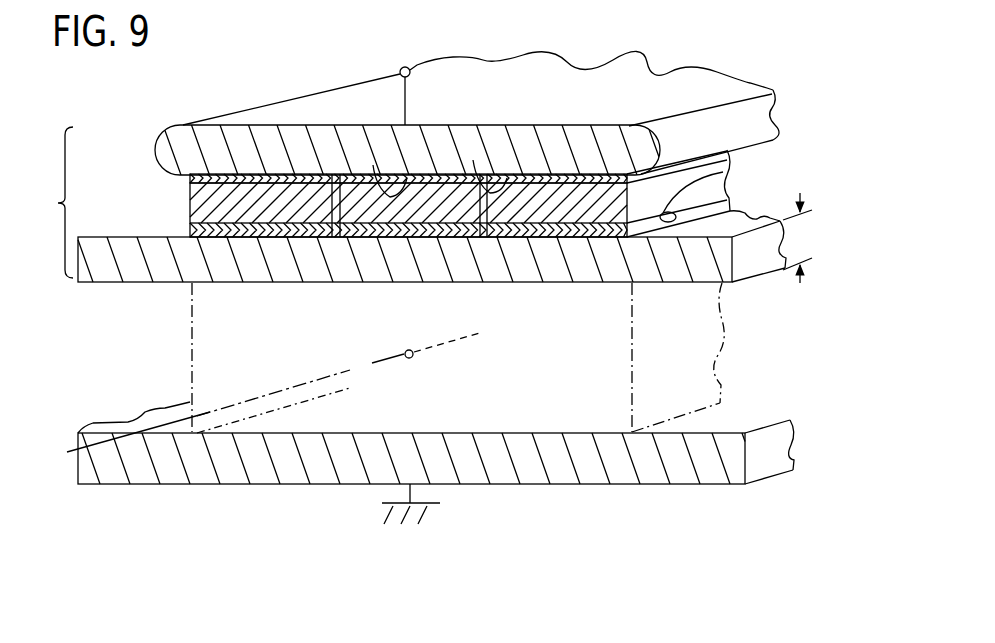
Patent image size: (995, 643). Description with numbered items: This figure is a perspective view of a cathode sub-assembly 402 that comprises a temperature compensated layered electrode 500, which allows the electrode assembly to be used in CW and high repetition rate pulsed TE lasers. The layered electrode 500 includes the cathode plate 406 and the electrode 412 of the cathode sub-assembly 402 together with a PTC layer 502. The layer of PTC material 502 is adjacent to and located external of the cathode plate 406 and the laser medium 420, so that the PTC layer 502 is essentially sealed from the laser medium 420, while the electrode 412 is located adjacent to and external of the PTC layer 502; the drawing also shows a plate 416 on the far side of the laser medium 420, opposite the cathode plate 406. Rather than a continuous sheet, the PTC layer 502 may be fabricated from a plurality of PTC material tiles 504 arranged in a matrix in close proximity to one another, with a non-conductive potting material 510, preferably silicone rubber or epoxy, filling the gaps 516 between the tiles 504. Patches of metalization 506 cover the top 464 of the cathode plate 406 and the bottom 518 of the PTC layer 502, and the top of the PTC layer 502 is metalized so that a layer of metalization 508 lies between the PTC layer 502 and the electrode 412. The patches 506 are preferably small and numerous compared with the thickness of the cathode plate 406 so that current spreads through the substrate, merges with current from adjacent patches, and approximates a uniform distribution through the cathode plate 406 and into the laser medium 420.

The cathode sub-assembly 402 is at (756, 42).
The electrode 412 is at (278, 112).
The layer of metalization 508 is at (215, 177).
The gaps 516 is at (327, 173).
The non-conductive potting material 510 is at (507, 178).
The PTC layer 502 is at (373, 165).
The PTC material tiles 504 is at (365, 235).
The patches of metalization 506 is at (565, 235).
The temperature compensated layered electrode 500 is at (45, 202).
The cathode plate 406 is at (117, 273).
The top surface of the cathode plate 464 is at (738, 220).
The bottom surface of the PTC layer 518 is at (730, 173).
The laser medium 420 is at (188, 360).
The bottom plate 416 is at (298, 475).